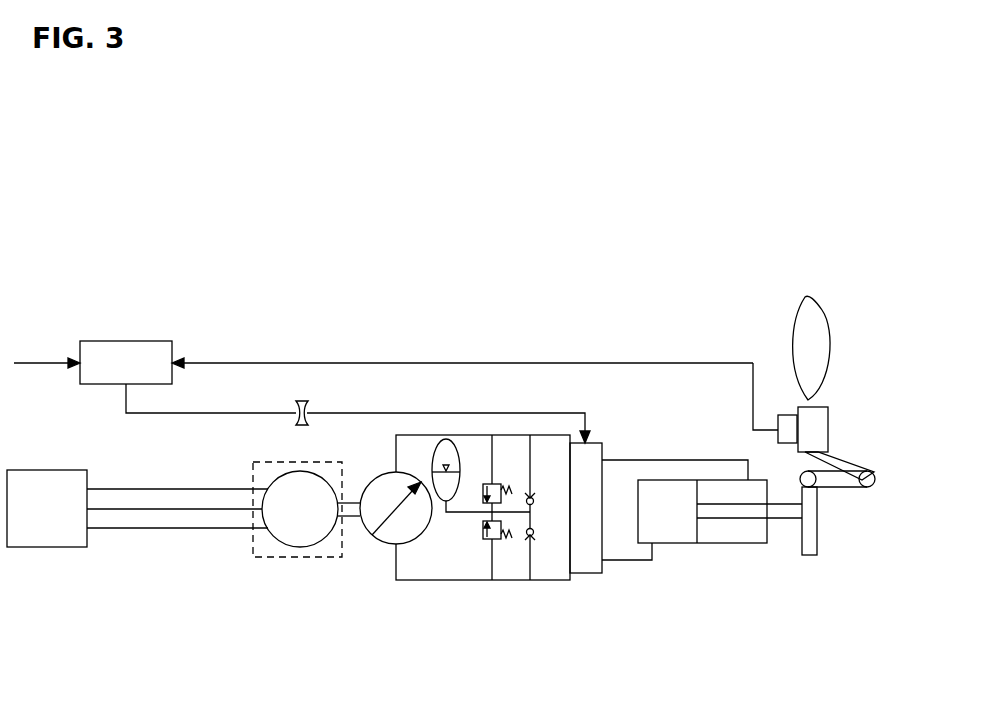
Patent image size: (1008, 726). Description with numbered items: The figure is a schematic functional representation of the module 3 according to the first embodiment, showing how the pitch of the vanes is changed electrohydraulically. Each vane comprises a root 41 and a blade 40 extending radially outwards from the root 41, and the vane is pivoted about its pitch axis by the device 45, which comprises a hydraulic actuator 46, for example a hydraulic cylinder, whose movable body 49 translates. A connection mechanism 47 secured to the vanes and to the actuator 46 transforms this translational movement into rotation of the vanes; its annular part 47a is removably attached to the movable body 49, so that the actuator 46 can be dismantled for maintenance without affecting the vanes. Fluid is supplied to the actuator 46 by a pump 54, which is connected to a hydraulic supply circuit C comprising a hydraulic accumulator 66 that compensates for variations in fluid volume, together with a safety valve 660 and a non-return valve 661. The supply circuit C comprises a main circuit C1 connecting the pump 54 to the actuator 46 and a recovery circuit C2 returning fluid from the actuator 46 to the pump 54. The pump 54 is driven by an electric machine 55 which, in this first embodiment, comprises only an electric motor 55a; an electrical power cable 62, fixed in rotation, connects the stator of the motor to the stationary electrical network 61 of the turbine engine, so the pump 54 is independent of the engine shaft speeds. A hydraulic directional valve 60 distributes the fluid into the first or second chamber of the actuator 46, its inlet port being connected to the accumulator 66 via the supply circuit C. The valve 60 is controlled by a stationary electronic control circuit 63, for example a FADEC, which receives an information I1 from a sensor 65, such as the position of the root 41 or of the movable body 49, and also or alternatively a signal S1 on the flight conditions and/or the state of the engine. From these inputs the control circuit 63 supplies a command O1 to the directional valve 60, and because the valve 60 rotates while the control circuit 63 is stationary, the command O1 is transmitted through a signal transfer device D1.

The module 3 is at (862, 368).
The blade 40 is at (815, 330).
The root 41 is at (815, 433).
The device for changing the pitch 45 is at (569, 640).
The hydraulic actuator 46 is at (717, 538).
The connection mechanism 47 is at (848, 462).
The annular part 47a is at (810, 500).
The movable body 49 is at (778, 520).
The pump 54 is at (372, 538).
The electric machine 55 is at (257, 543).
The electric motor 55a is at (300, 547).
The hydraulic directional valve 60 is at (585, 573).
The electrical network 61 is at (57, 527).
The electrical power cable 62 is at (147, 528).
The electronic control circuit 63 is at (143, 341).
The sensor 65 is at (778, 425).
The hydraulic accumulator 66 is at (440, 448).
The safety valve 660 is at (495, 483).
The non-return valve 661 is at (528, 538).
The signal S1 is at (27, 362).
The signal transfer device D1 is at (306, 399).
The command O1 is at (383, 413).
The information I1 is at (615, 363).
The hydraulic supply circuit C is at (420, 433).
The main circuit C1 is at (557, 433).
The recovery circuit C2 is at (405, 582).